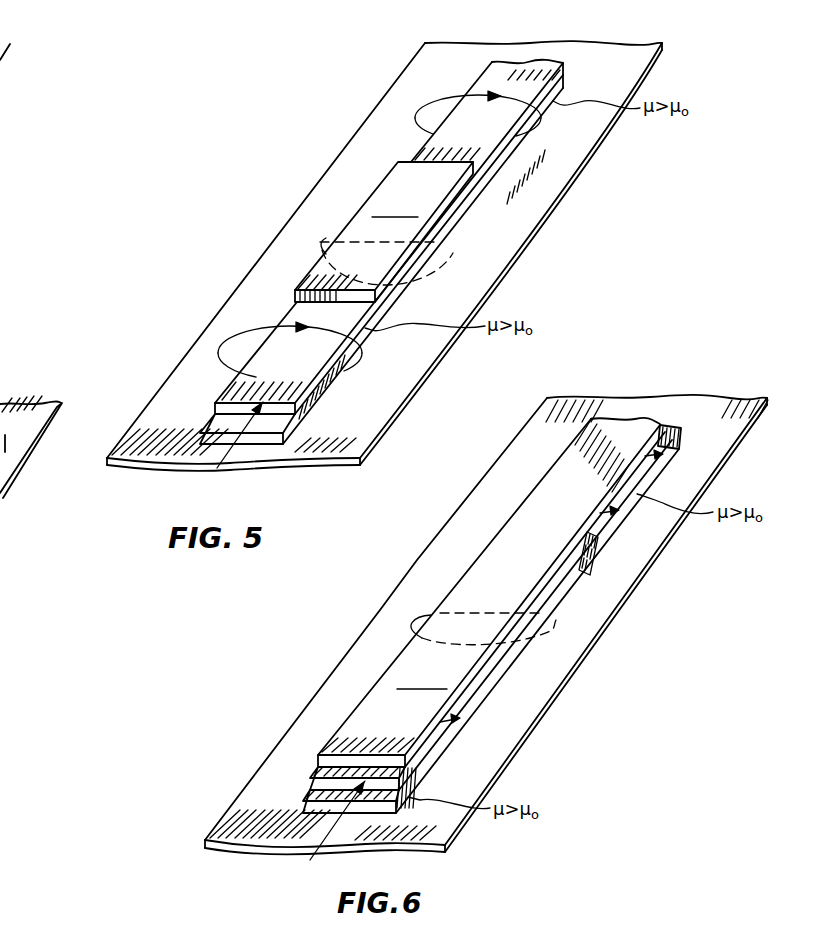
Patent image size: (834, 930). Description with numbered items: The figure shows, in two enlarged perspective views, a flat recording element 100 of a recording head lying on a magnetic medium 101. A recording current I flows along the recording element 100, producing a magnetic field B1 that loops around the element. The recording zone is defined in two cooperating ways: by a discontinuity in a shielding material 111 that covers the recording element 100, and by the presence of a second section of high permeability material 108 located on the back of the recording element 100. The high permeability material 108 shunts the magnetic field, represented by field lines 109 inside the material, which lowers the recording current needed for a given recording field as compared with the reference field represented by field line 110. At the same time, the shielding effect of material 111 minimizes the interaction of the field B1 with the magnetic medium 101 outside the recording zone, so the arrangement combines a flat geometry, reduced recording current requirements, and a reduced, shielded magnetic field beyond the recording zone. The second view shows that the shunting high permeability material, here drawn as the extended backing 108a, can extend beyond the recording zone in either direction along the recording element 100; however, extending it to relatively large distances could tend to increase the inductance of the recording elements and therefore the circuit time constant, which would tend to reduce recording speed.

In FIG. 5, the recording element 100 is at (495, 73).
In FIG. 6, the recording element 100 is at (673, 427).
In FIG. 5, the magnetic medium 101 is at (606, 140).
In FIG. 6, the magnetic medium 101 is at (750, 443).
In FIG. 5, the high permeability material 108 is at (402, 170).
In FIG. 6, the high permeability layer 108a is at (612, 428).
In FIG. 5, the field lines 109 is at (436, 247).
In FIG. 6, the field lines 109 is at (548, 616).
In FIG. 6, the field line 110 is at (663, 456).
In FIG. 5, the material 111 is at (558, 90).
In FIG. 6, the material 111 is at (682, 438).
In FIG. 5, the magnetic field B1 is at (520, 147).
In FIG. 5, the current I is at (229, 449).
In FIG. 6, the current I is at (325, 833).